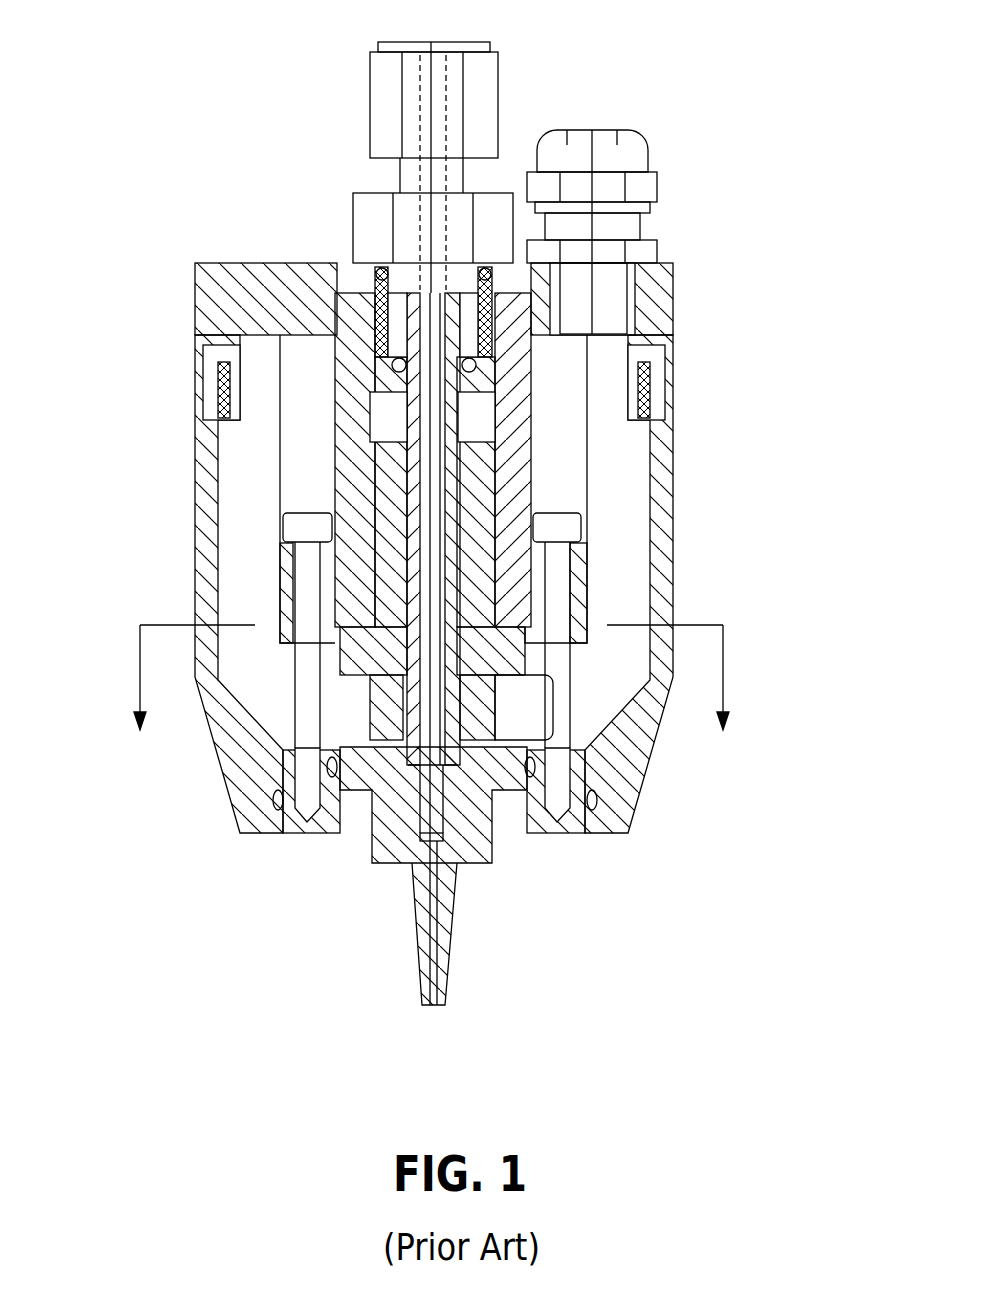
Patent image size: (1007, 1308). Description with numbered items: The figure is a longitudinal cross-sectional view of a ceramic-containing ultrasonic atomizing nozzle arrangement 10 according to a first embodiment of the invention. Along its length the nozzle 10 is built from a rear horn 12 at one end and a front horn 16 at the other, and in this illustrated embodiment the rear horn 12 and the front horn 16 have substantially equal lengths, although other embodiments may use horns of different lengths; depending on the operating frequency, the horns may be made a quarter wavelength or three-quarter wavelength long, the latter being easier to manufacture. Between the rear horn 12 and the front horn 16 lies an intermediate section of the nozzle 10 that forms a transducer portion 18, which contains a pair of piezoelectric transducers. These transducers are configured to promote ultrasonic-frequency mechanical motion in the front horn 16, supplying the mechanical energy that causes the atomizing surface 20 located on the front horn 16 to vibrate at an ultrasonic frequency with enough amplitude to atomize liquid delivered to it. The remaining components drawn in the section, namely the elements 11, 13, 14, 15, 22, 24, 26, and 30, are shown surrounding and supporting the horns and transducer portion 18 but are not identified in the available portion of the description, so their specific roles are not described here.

The ultrasonic atomizing nozzle arrangement 10 is at (212, 108).
The housing body 11 is at (210, 733).
The rear horn 12 is at (372, 502).
The cap 13 is at (288, 262).
The top fitting 14 is at (450, 146).
The seal 15 is at (388, 266).
The front horn 16 is at (492, 863).
The transducer portion 18 is at (520, 713).
The atomizing surface 20 is at (432, 1005).
The block 22 is at (340, 658).
The cylinder 24 is at (590, 617).
The screw 26 is at (283, 515).
The fastener 30 is at (378, 800).